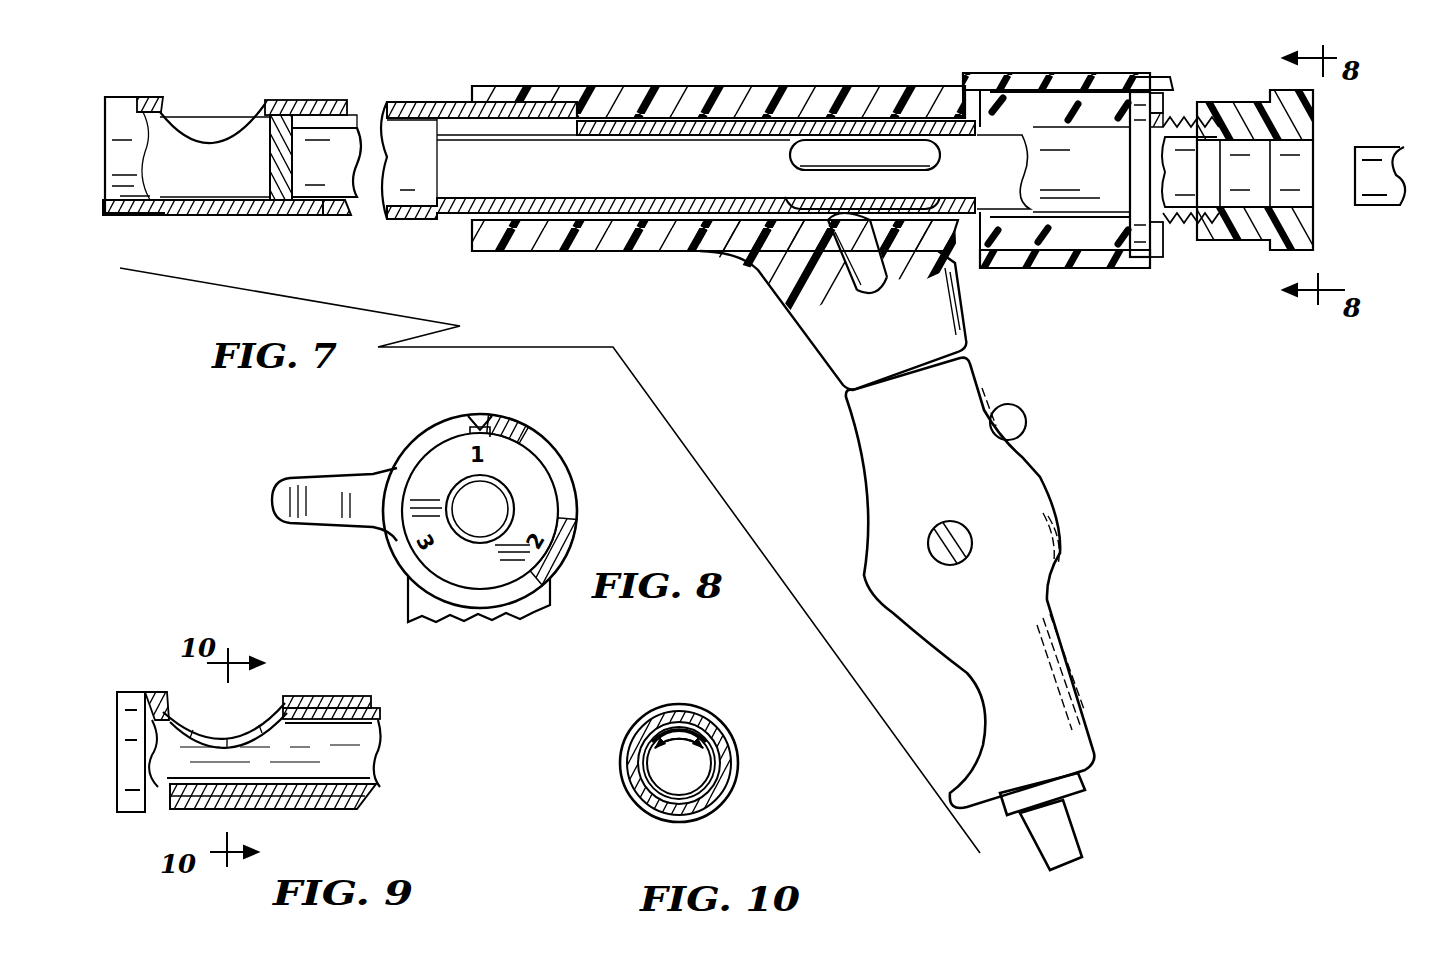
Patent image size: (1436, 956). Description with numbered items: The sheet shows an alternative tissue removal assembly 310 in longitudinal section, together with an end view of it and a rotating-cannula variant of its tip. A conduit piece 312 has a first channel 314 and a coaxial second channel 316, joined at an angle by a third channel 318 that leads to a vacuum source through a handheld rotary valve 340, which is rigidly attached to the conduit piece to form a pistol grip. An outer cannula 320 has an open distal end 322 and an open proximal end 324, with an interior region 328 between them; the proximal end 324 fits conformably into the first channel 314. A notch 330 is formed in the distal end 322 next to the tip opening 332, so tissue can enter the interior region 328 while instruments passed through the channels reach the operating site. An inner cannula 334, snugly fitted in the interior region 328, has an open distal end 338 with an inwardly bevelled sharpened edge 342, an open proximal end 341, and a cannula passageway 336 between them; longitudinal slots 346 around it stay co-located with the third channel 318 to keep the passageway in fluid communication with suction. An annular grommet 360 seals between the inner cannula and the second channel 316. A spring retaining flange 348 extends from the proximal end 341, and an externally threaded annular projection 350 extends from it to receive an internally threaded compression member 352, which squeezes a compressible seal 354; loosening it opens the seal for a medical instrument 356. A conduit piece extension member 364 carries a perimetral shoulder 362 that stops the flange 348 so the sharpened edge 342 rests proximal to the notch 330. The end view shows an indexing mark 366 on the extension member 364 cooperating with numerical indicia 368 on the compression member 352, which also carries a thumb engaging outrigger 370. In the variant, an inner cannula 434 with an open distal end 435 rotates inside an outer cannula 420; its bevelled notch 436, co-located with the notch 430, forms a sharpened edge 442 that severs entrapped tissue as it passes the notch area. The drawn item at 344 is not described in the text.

In FIG. 7, the tissue removal assembly 310 is at (718, 84).
In FIG. 7, the conduit piece 312 is at (803, 86).
In FIG. 7, the first channel 314 is at (628, 217).
In FIG. 7, the second channel 316 is at (963, 215).
In FIG. 7, the third channel 318 is at (873, 283).
In FIG. 7, the outer cannula 320 is at (452, 98).
In FIG. 7, the open distal end 322 is at (133, 92).
In FIG. 7, the open proximal end 324 is at (557, 102).
In FIG. 7, the interior region 328 is at (257, 177).
In FIG. 7, the notch 330 is at (222, 139).
In FIG. 7, the tip opening 332 is at (100, 213).
In FIG. 7, the inner cannula 334 is at (587, 224).
In FIG. 7, the cannula passageway 336 is at (468, 180).
In FIG. 7, the open distal end 338 is at (323, 215).
In FIG. 7, the handheld rotary valve 340 is at (987, 374).
In FIG. 7, the open proximal end 341 is at (1113, 226).
In FIG. 7, the sharpened edge 342 is at (278, 155).
In FIG. 7, the pivot screw 344 is at (975, 533).
In FIG. 7, the longitudinal slots 346 is at (812, 192).
In FIG. 7, the spring retaining flange 348 is at (1140, 238).
In FIG. 7, the externally threaded annular projection 350 is at (1180, 230).
In FIG. 7, the compression member 352 is at (1277, 253).
In FIG. 8, the compression member 352 is at (433, 583).
In FIG. 7, the compressible seal 354 is at (1247, 117).
In FIG. 7, the medical instrument 356 is at (1363, 170).
In FIG. 7, the annular grommet 360 is at (1040, 80).
In FIG. 7, the perimetral shoulder 362 is at (1180, 97).
In FIG. 7, the conduit piece extension member 364 is at (1110, 80).
In FIG. 7, the indexing mark 366 is at (1175, 85).
In FIG. 8, the indexing mark 366 is at (483, 418).
In FIG. 8, the numerical indicia 368 is at (500, 445).
In FIG. 8, the thumb engaging outrigger 370 is at (323, 497).
In FIG. 9, the outer cannula 420 is at (358, 817).
In FIG. 10, the outer cannula 420 is at (638, 793).
In FIG. 9, the notch 430 is at (280, 700).
In FIG. 10, the notch 430 is at (690, 705).
In FIG. 9, the inner cannula 434 is at (357, 709).
In FIG. 10, the inner cannula 434 is at (727, 782).
In FIG. 9, the open distal end 435 is at (157, 716).
In FIG. 9, the bevelled notch 436 is at (200, 730).
In FIG. 10, the bevelled notch 436 is at (648, 737).
In FIG. 10, the sharpened edge 442 is at (710, 750).